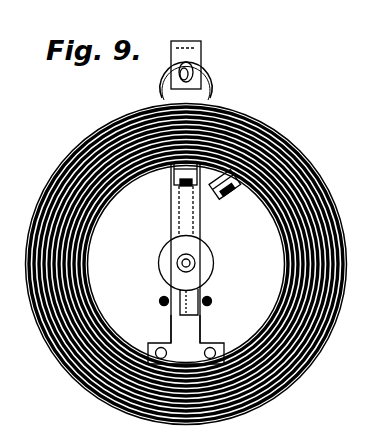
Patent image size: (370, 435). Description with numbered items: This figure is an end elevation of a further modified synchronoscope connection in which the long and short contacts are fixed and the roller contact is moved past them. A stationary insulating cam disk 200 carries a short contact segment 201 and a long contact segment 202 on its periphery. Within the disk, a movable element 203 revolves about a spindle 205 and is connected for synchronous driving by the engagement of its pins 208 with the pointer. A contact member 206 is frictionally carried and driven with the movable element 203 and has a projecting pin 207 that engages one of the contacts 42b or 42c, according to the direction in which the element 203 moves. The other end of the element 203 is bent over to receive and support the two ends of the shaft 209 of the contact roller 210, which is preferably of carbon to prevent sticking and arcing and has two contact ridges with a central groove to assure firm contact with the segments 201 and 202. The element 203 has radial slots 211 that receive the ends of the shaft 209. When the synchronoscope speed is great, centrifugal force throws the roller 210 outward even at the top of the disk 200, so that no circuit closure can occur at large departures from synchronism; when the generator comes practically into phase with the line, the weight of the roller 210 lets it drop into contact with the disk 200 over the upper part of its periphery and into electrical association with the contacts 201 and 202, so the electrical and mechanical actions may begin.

The stationary insulating cam disk 200 is at (304, 171).
The short contact segment 201 is at (276, 140).
The long contact segment 202 is at (240, 116).
The movable element 203 is at (192, 212).
The spindle 205 is at (181, 253).
The contact member 206 is at (158, 244).
The projecting pin 207 is at (200, 285).
The pins 208 is at (151, 340).
The shaft 209 is at (194, 68).
The contact roller 210 is at (152, 68).
The radial slots 211 is at (183, 60).
The contact 42b is at (151, 293).
The contact 42c is at (204, 293).